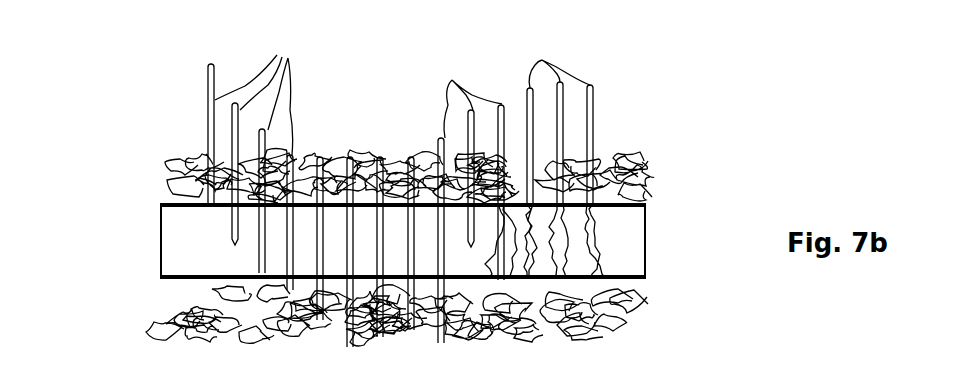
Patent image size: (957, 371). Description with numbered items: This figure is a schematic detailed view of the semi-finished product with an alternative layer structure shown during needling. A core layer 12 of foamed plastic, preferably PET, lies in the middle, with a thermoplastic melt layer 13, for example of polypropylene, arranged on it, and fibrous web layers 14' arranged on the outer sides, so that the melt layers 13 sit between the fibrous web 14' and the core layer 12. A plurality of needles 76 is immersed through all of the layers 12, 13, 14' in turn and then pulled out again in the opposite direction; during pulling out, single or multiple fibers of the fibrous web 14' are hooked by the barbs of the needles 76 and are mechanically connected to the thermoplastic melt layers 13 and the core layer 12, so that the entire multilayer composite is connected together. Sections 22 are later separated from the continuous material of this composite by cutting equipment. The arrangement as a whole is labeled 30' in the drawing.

The needles 76 is at (406, 184).
The nonwoven fiber layer assembly 30' is at (436, 130).
The core layer 12 is at (630, 235).
The thermoplastic melt layer 13 is at (627, 270).
The fibrous web 14' is at (430, 315).
The sections 22 is at (162, 216).